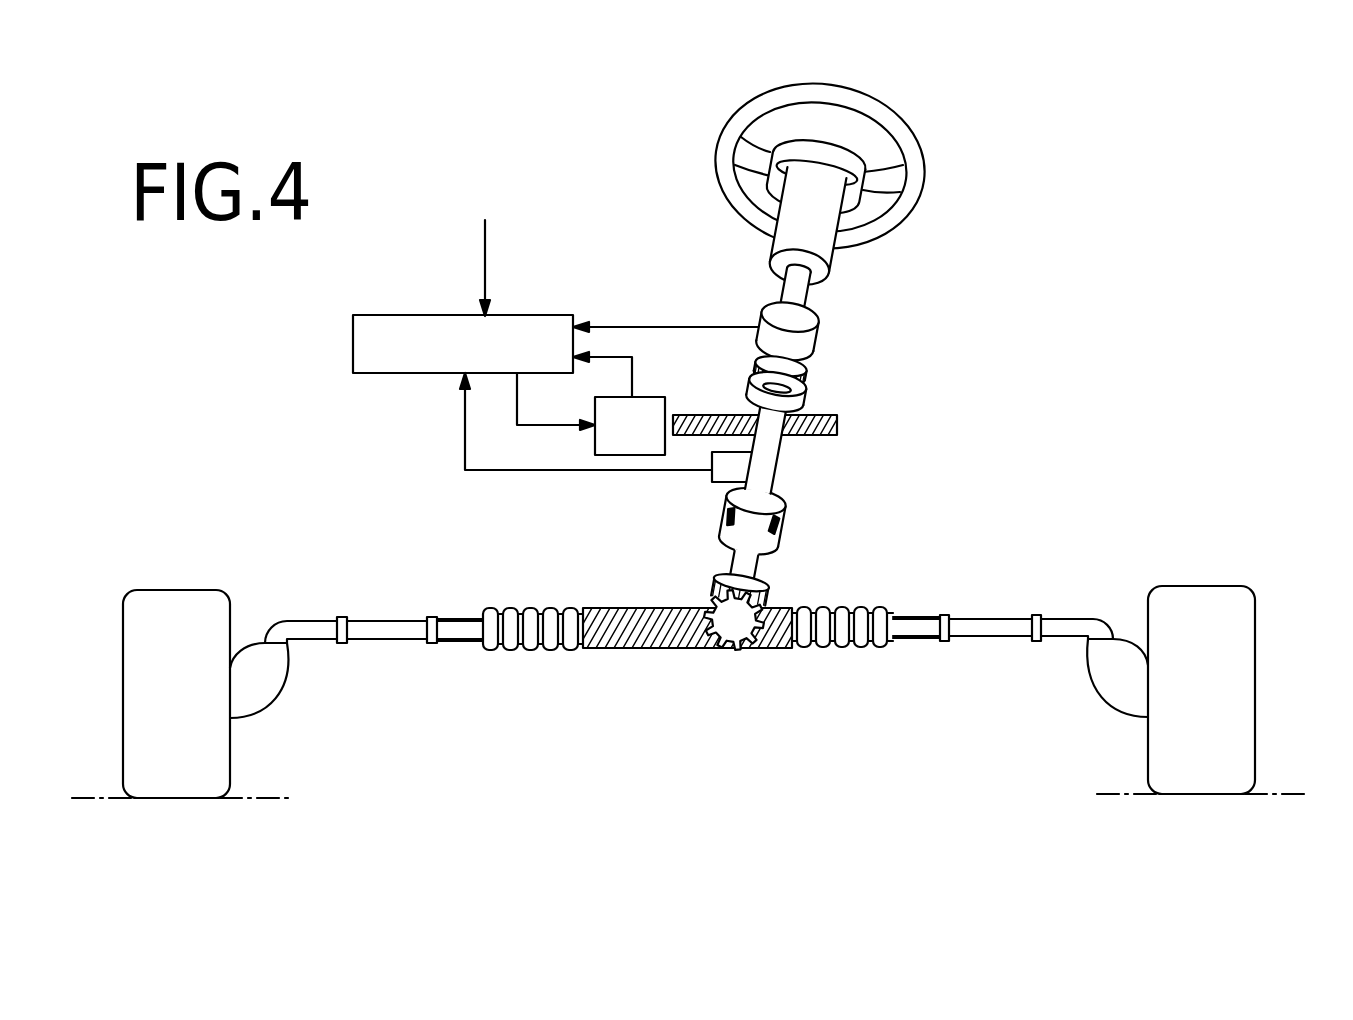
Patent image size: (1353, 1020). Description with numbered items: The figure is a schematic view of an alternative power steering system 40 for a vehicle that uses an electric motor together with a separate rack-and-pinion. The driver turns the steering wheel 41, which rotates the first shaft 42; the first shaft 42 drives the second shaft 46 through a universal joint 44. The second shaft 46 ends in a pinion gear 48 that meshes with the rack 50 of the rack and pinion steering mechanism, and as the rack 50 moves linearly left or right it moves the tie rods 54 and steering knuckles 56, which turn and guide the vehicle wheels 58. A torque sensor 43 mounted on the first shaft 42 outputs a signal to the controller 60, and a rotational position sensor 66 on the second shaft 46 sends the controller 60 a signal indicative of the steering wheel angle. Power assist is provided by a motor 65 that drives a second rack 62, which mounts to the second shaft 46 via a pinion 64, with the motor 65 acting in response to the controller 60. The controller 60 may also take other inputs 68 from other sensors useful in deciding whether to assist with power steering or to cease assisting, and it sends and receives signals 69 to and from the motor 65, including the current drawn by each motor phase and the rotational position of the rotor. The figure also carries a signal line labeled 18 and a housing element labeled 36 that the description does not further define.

The steering sensor signal line 18 is at (630, 327).
The rack housing bellows 36 is at (846, 656).
The power steering system 40 is at (1012, 277).
The steering wheel 41 is at (905, 140).
The first shaft 42 is at (802, 278).
The torque sensor 43 is at (763, 313).
The universal joint 44 is at (145, 677).
The second shaft 46 is at (760, 578).
The pinion gear 48 is at (710, 595).
The rack 50 is at (650, 648).
The tie rods 54 is at (378, 643).
The steering knuckles 56 is at (258, 688).
The vehicle wheels 58 is at (1208, 600).
The controller 60 is at (437, 315).
The second rack 62 is at (835, 428).
The pinion 64 is at (795, 387).
The motor 65 is at (655, 400).
The rotational position sensor 66 is at (712, 470).
The other inputs 68 is at (485, 255).
The signals 69 is at (631, 368).